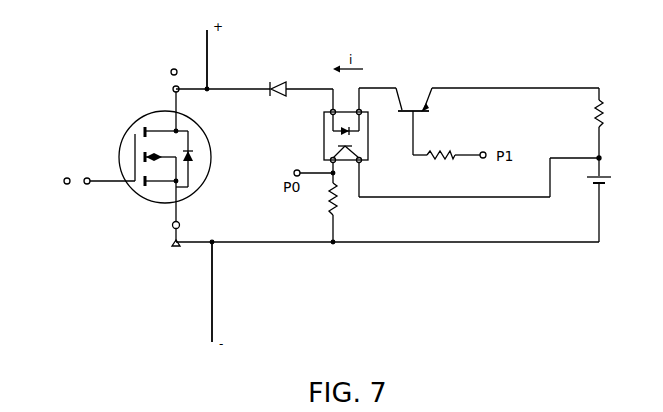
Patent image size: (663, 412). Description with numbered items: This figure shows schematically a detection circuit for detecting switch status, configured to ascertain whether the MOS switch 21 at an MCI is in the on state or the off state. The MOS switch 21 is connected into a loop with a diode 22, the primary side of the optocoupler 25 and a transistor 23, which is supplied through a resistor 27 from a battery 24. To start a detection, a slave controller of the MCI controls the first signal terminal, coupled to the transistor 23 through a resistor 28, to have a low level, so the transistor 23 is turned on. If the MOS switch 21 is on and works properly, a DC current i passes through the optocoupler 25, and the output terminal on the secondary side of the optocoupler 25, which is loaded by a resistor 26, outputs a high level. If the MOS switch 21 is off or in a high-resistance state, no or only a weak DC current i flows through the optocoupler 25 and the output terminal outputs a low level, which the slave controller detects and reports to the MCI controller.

The MOS switch 21 is at (137, 157).
The diode 22 is at (279, 78).
The transistor 23 is at (479, 111).
The battery 24 is at (612, 200).
The optocoupler 25 is at (333, 142).
The resistor 26 is at (344, 208).
The resistor 27 is at (611, 123).
The resistor 28 is at (446, 166).